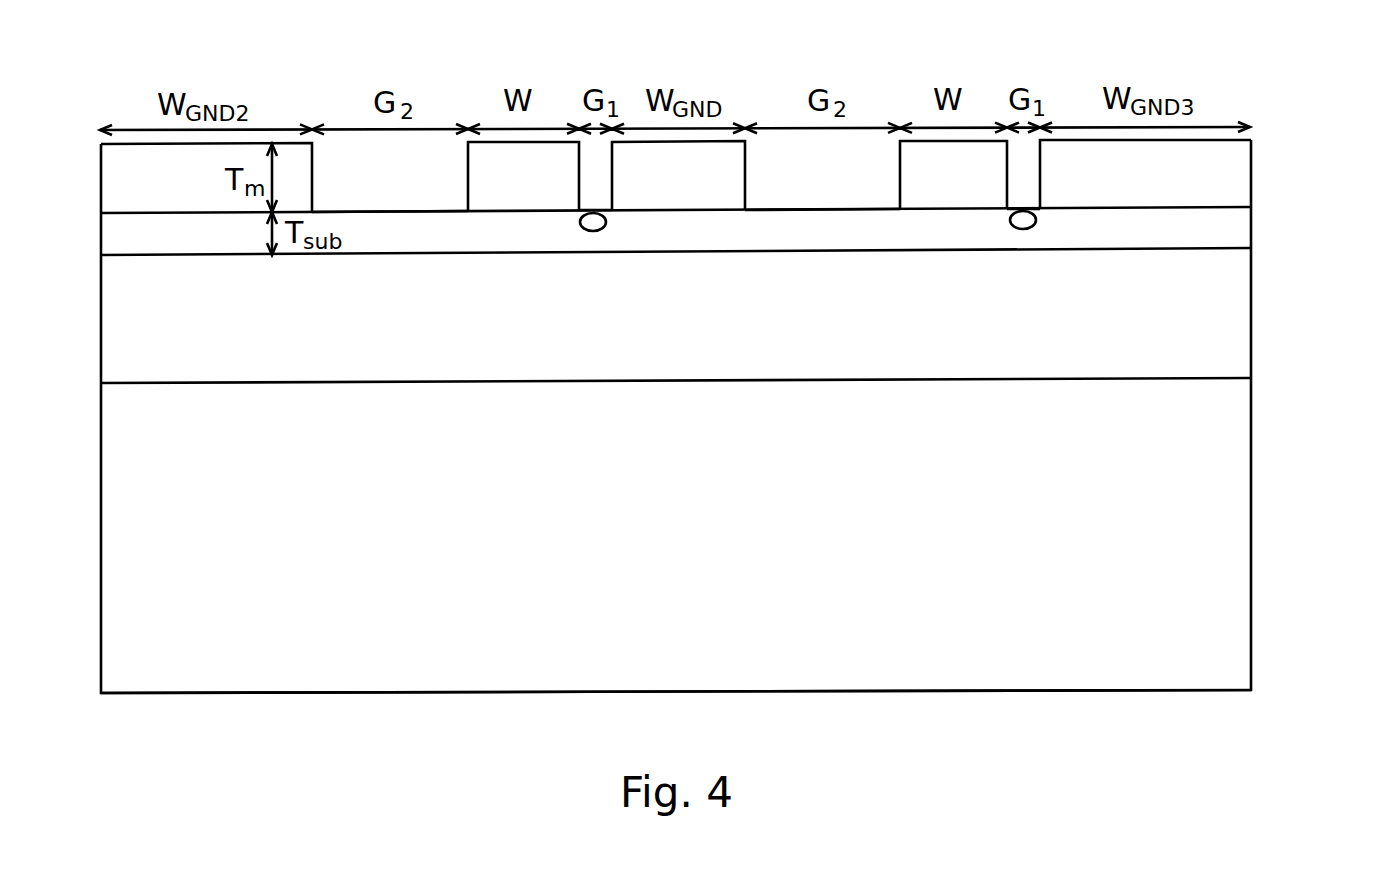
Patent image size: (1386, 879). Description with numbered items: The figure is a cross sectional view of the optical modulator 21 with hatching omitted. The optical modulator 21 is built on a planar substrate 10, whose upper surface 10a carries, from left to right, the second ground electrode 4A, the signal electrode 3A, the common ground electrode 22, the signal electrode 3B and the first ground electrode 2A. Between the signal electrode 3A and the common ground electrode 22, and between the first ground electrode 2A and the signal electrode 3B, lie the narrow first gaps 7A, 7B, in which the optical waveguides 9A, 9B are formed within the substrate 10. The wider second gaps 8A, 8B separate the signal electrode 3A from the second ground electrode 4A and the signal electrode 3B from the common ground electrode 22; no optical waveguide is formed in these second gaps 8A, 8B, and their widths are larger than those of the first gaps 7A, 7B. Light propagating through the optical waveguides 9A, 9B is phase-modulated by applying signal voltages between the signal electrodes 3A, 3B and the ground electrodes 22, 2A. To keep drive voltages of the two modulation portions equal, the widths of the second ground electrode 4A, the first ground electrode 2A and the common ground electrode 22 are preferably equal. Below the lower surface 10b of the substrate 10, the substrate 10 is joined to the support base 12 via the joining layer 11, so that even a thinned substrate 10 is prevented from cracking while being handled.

The optical modulator 21 is at (1273, 145).
The substrate 10 is at (735, 218).
The surface of the substrate 10a is at (1235, 206).
The lower surface of the substrate 10b is at (1232, 249).
The joining layer 11 is at (1245, 318).
The support base 12 is at (1238, 470).
The second ground electrode 4A is at (175, 203).
The signal electrode 3A is at (522, 203).
The common ground electrode 22 is at (685, 203).
The signal electrode 3B is at (957, 197).
The first ground electrode 2A is at (1148, 193).
The second gap 8A is at (425, 215).
The second gap 8B is at (848, 214).
The first gap 7A is at (614, 215).
The first gap 7B is at (1042, 212).
The optical waveguide 9A is at (593, 231).
The optical waveguide 9B is at (1023, 229).